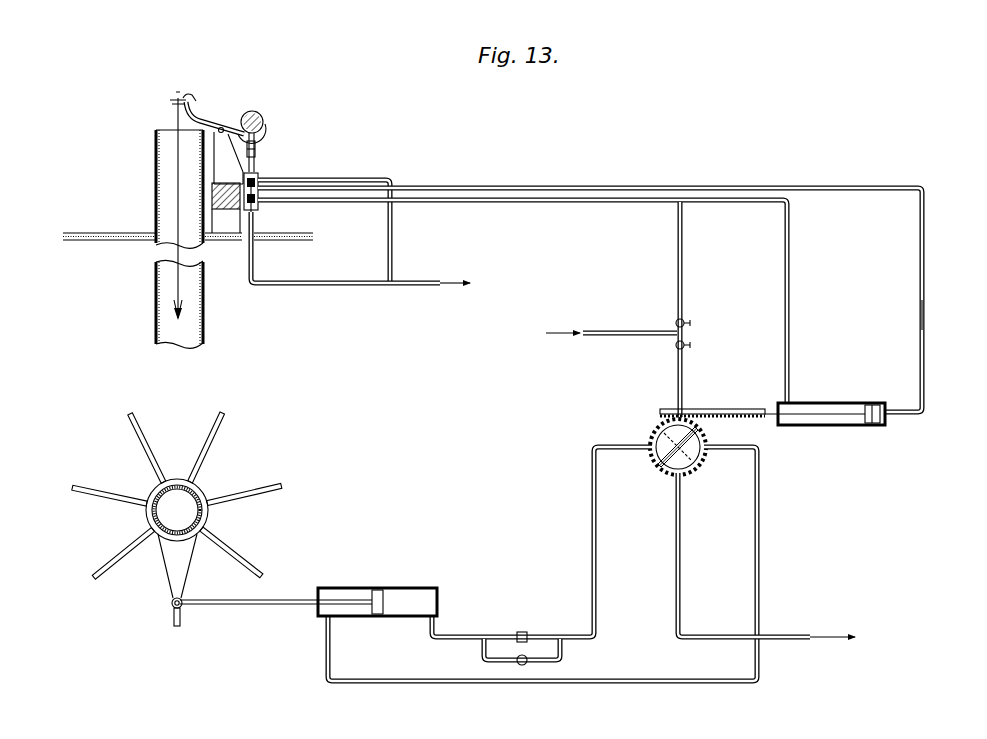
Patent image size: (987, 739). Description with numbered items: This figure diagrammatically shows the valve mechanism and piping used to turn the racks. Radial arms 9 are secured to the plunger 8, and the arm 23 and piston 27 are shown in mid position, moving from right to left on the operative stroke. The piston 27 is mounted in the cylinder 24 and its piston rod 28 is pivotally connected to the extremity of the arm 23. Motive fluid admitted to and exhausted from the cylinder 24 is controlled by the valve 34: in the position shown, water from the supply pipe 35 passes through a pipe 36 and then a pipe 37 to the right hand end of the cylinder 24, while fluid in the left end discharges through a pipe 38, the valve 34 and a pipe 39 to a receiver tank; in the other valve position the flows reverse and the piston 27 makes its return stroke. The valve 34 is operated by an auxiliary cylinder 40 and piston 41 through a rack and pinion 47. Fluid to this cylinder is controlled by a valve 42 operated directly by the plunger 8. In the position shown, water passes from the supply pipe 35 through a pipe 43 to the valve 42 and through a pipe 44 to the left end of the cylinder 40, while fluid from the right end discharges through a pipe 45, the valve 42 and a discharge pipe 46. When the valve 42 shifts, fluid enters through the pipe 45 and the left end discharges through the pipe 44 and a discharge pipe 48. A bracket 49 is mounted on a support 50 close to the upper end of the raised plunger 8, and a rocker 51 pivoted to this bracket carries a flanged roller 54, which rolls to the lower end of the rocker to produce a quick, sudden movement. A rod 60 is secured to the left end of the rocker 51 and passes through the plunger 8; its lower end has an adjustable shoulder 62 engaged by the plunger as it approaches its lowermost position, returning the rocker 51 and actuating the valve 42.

The plunger 8 is at (155, 210).
The radial arms 9 is at (200, 452).
The arm 23 is at (186, 577).
The cylinder 24 is at (406, 617).
The piston 27 is at (378, 589).
The piston rod 28 is at (291, 606).
The valve 34 is at (663, 463).
The supply pipe 35 is at (637, 333).
The pipe 36 is at (683, 385).
The pipe 37 is at (592, 548).
The pipe 38 is at (476, 684).
The pipe 39 is at (681, 568).
The auxiliary cylinder 40 is at (824, 404).
The auxiliary piston 41 is at (873, 405).
The valve 42 is at (257, 176).
The pipe 43 is at (684, 270).
The pipe 44 is at (343, 199).
The pipe 45 is at (926, 300).
The discharge pipe 46 is at (393, 250).
The rack and pinion 47 is at (724, 420).
The discharge pipe 48 is at (349, 286).
The bracket 49 is at (223, 152).
The support 50 is at (238, 212).
The rocker 51 is at (200, 118).
The flanged roller 54 is at (255, 108).
The rod 60 is at (176, 177).
The adjustable shoulder 62 is at (183, 312).